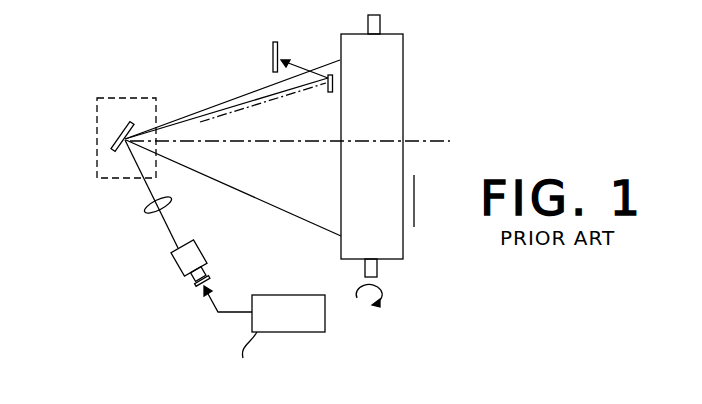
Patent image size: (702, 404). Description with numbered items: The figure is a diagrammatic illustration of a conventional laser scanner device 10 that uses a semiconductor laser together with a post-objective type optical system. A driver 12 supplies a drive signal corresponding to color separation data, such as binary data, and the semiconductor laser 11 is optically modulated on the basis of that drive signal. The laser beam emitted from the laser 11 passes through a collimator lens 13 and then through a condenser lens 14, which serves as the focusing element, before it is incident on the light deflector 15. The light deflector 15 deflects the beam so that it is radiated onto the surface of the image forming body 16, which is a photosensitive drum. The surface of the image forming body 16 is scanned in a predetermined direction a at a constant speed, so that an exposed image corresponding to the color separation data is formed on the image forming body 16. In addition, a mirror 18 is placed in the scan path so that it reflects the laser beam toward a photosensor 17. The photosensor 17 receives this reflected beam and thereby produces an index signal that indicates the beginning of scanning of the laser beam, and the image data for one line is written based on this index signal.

The laser scanner device 10 is at (123, 66).
The semiconductor laser 11 is at (207, 275).
The driver 12 is at (325, 322).
The collimator lens 13 is at (180, 278).
The condenser lens 14 is at (147, 207).
The light deflector 15 is at (93, 163).
The image forming body 16 is at (403, 95).
The photosensor 17 is at (278, 49).
The mirror 18 is at (328, 92).